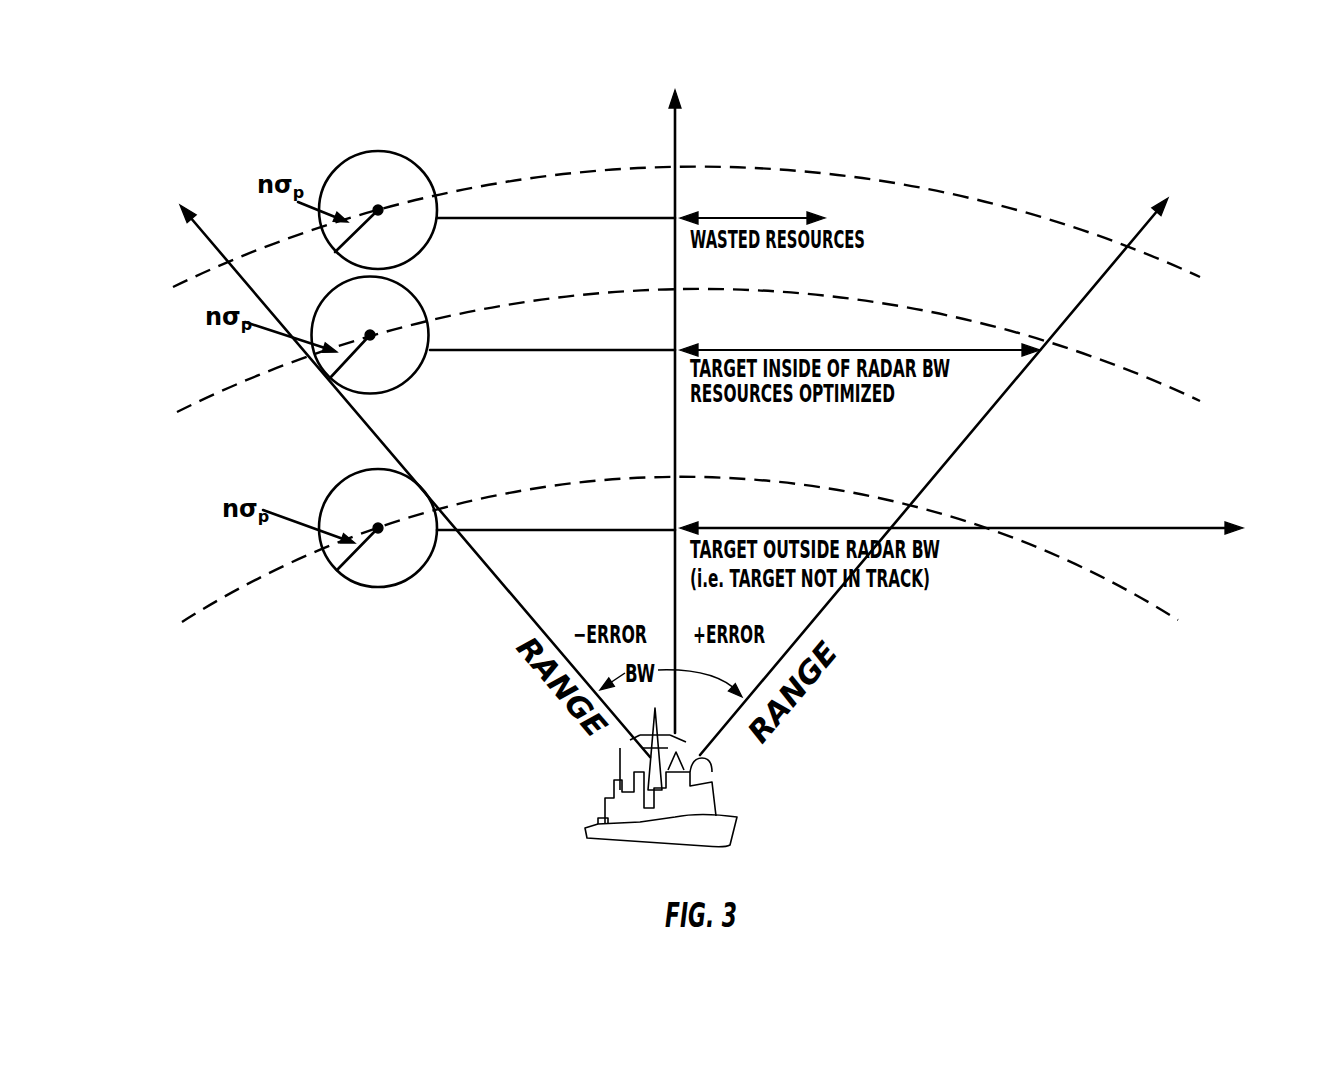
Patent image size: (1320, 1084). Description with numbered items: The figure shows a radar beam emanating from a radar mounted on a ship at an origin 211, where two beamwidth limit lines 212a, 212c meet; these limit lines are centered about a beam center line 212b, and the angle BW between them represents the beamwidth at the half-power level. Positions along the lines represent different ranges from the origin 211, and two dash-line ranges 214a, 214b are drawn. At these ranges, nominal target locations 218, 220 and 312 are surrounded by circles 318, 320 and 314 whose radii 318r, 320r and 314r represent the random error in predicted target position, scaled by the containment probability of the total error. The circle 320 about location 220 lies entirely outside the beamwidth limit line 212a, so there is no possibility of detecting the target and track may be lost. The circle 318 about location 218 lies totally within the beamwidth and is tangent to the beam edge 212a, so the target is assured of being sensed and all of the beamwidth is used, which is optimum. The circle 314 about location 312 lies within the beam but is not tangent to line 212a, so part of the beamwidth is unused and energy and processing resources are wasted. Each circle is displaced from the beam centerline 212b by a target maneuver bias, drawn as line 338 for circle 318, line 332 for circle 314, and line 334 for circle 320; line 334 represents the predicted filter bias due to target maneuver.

The origin 211 is at (690, 777).
The beamwidth limit line 212a is at (415, 481).
The beam center line 212b is at (717, 411).
The beamwidth limit line 212c is at (934, 476).
The range 214a is at (688, 342).
The range 214b is at (680, 525).
The target location 218 is at (387, 357).
The target location 220 is at (356, 514).
The nominal target location 312 is at (358, 193).
The random variation circle 314 is at (378, 210).
The radius 314r is at (324, 249).
The circle 318 is at (394, 343).
The radius 318r is at (392, 387).
The circle 320 is at (378, 551).
The radius 320r is at (381, 549).
The line 332 is at (631, 226).
The line 334 is at (556, 536).
The line 338 is at (735, 353).